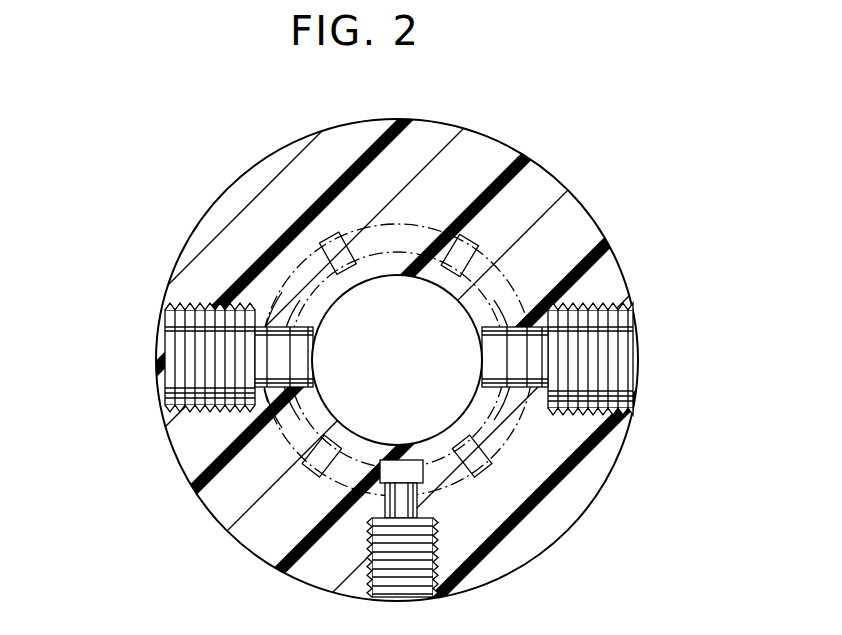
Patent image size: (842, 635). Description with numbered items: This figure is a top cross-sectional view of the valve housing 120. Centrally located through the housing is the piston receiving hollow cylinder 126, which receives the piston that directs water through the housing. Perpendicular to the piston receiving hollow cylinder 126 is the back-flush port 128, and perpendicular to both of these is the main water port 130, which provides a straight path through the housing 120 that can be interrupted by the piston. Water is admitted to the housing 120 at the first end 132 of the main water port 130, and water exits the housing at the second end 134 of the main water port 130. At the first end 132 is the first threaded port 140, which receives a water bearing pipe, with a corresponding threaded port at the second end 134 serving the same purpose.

The valve housing 120 is at (635, 533).
The piston receiving hollow cylinder 126 is at (415, 377).
The back-flush port 128 is at (408, 474).
The main water port 130 is at (690, 328).
The first end 132 is at (600, 336).
The second end 134 is at (160, 363).
The first threaded port 140 is at (512, 332).